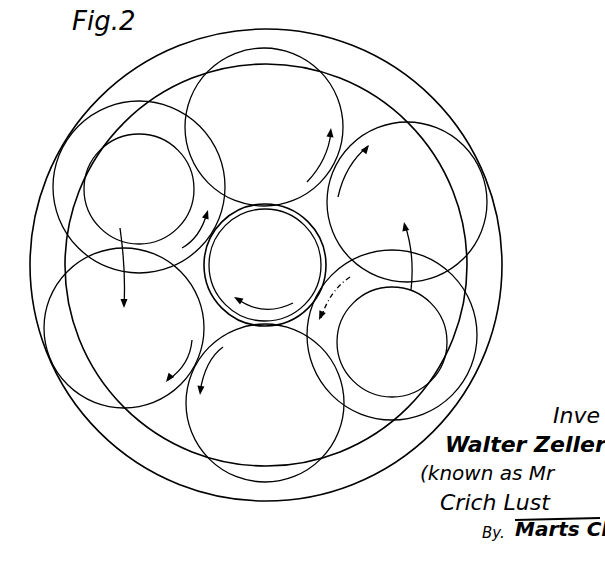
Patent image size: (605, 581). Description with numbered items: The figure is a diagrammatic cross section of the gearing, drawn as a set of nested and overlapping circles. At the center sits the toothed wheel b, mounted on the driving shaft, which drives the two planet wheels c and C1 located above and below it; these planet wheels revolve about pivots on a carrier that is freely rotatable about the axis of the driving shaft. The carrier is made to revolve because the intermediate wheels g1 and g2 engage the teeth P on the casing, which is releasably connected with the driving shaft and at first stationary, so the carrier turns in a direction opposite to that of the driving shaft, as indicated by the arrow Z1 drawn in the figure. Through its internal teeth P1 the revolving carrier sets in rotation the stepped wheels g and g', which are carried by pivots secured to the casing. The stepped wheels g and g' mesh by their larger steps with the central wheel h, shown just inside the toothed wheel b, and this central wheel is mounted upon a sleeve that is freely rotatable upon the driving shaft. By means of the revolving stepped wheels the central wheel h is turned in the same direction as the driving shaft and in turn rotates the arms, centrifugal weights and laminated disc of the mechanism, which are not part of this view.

The teeth on casing P is at (402, 72).
The internal teeth of planet-wheel carrier P1 is at (393, 112).
The toothed wheel b is at (225, 221).
The central wheel h is at (320, 247).
The planet wheel c is at (301, 55).
The planet wheel C1 is at (245, 480).
The arrow Z1 is at (147, 102).
The stepped wheel g is at (277, 260).
The stepped wheel g' is at (266, 265).
The intermediate wheel g1 is at (487, 220).
The intermediate wheel g2 is at (83, 400).